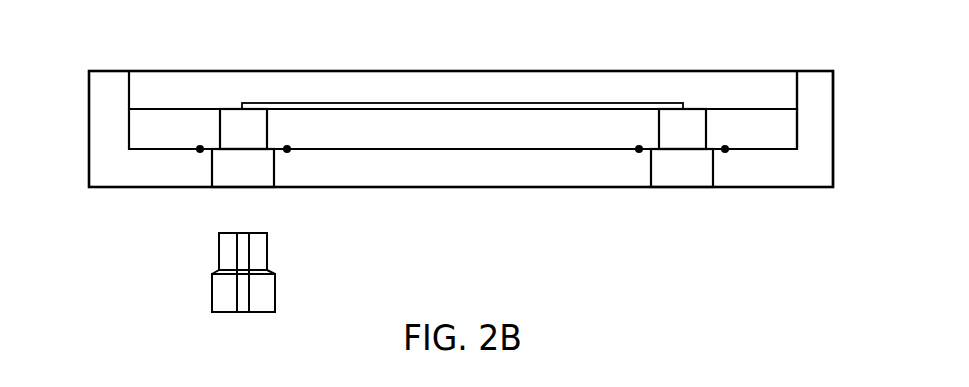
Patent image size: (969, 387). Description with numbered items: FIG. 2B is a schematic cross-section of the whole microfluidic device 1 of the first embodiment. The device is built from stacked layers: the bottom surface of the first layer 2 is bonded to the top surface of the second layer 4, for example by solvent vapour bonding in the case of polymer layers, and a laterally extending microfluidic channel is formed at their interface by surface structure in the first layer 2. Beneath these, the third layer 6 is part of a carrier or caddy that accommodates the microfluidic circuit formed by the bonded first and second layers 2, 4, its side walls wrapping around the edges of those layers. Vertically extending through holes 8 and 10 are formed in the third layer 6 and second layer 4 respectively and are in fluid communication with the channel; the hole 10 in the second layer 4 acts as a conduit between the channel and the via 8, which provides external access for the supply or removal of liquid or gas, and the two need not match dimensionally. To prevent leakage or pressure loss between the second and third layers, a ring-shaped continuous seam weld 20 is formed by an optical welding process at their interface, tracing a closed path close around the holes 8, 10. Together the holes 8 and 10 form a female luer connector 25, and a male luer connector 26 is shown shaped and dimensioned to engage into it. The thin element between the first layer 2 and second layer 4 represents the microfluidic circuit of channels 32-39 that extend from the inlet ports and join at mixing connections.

The microfluidic device 1 is at (84, 135).
The first layer 2 is at (753, 90).
The second layer 4 is at (777, 130).
The third layer 6 is at (834, 110).
The through hole 8 is at (275, 173).
The through hole 10 is at (270, 128).
The ring-shaped continuous seam weld 20 is at (287, 151).
The female luer connector 25 is at (215, 199).
The male luer connector 26 is at (212, 288).
The channels 32-39 is at (494, 103).